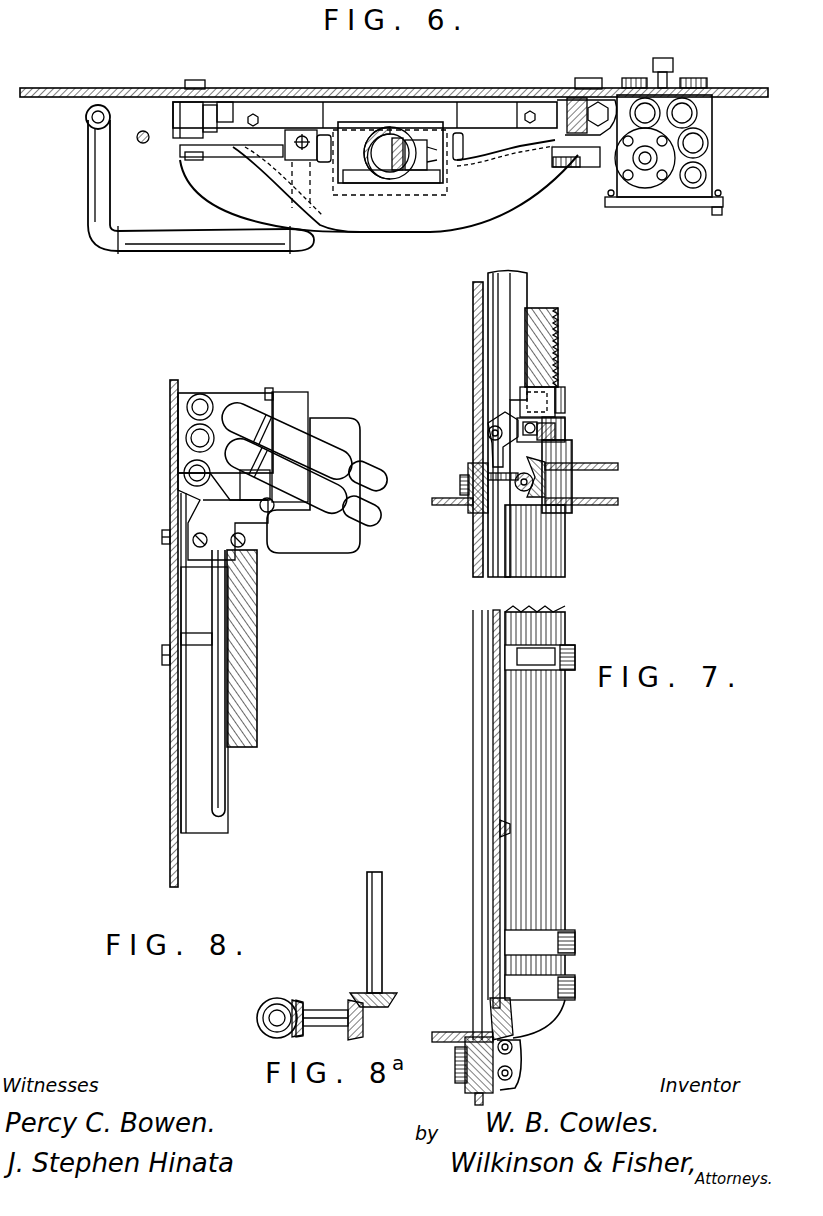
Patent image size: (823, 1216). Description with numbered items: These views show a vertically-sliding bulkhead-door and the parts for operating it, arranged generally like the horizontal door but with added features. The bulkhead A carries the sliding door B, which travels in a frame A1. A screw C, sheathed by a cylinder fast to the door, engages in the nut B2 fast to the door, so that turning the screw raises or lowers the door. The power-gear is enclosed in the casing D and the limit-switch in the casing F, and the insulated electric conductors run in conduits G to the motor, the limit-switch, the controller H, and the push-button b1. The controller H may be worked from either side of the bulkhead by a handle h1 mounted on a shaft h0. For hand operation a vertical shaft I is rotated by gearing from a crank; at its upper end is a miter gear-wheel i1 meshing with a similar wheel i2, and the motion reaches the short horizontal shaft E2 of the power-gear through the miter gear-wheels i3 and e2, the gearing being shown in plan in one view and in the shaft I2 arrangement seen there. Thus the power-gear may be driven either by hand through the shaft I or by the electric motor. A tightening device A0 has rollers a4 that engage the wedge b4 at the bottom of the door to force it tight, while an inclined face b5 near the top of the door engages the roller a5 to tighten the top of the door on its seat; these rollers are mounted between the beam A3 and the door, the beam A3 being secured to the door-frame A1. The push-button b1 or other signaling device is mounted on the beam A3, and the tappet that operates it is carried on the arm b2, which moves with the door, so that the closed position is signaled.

In FIG. 6, the bulkhead A is at (281, 90).
In FIG. 8, the bulkhead A is at (170, 845).
In FIG. 7, the bulkhead A is at (510, 302).
In FIG. 6, the frame A1 is at (597, 100).
In FIG. 8, the frame A1 is at (208, 825).
In FIG. 6, the beam A3 is at (544, 206).
In FIG. 7, the beam A3 is at (605, 468).
In FIG. 7, the tightening device A0 is at (517, 1067).
In FIG. 7, the rollers a4 is at (515, 1043).
In FIG. 7, the roller a5 is at (572, 455).
In FIG. 6, the sliding door B is at (370, 122).
In FIG. 7, the sliding door B is at (533, 717).
In FIG. 6, the nut B2 is at (414, 148).
In FIG. 7, the nut B2 is at (557, 413).
In FIG. 6, the push-button b1 is at (305, 136).
In FIG. 7, the arm b2 is at (490, 430).
In FIG. 7, the wedge b4 is at (497, 1017).
In FIG. 7, the inclined face b5 is at (473, 500).
In FIG. 6, the screw C is at (396, 138).
In FIG. 8, the screw C is at (255, 653).
In FIG. 7, the screw C is at (557, 334).
In FIG. 8, the casing for the power-gear D is at (333, 437).
In FIG. 8A, the short horizontal shaft E2 is at (371, 874).
In FIG. 8A, the miter gear-wheel e2 is at (386, 997).
In FIG. 8, the casing for the limit-switch F is at (285, 412).
In FIG. 6, the conduits G is at (695, 110).
In FIG. 8, the conduits G is at (238, 410).
In FIG. 6, the controller H is at (707, 160).
In FIG. 6, the handle h1 is at (661, 58).
In FIG. 6, the shaft h0 is at (672, 80).
In FIG. 6, the vertical shaft I is at (142, 154).
In FIG. 8, the vertical shaft I is at (227, 775).
In FIG. 8A, the vertical shaft I is at (258, 1016).
In FIG. 8A, the miter gear-wheel i1 is at (277, 998).
In FIG. 8A, the miter gear-wheel i2 is at (297, 1000).
In FIG. 8A, the shaft I2 is at (321, 1010).
In FIG. 8A, the miter gear-wheel i3 is at (364, 1025).